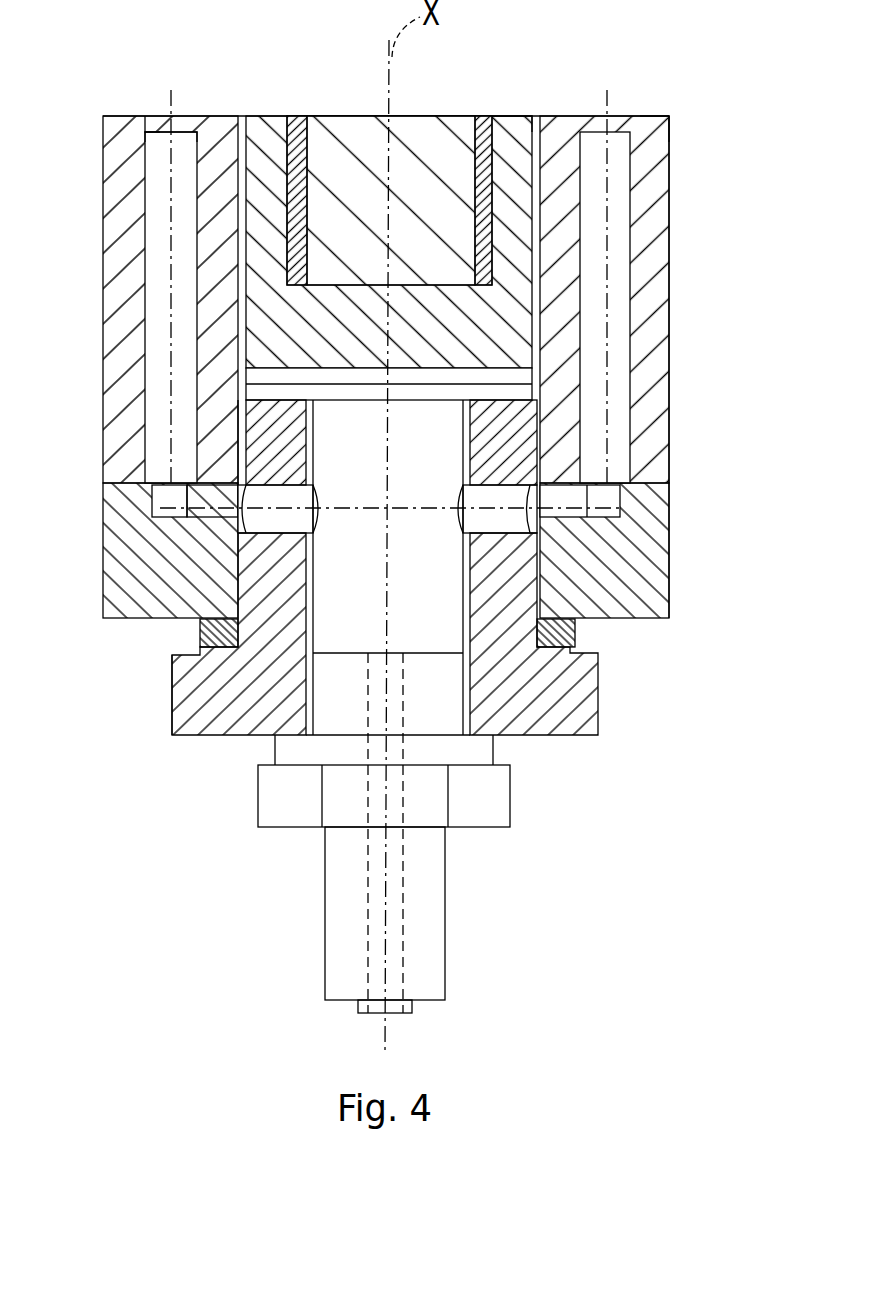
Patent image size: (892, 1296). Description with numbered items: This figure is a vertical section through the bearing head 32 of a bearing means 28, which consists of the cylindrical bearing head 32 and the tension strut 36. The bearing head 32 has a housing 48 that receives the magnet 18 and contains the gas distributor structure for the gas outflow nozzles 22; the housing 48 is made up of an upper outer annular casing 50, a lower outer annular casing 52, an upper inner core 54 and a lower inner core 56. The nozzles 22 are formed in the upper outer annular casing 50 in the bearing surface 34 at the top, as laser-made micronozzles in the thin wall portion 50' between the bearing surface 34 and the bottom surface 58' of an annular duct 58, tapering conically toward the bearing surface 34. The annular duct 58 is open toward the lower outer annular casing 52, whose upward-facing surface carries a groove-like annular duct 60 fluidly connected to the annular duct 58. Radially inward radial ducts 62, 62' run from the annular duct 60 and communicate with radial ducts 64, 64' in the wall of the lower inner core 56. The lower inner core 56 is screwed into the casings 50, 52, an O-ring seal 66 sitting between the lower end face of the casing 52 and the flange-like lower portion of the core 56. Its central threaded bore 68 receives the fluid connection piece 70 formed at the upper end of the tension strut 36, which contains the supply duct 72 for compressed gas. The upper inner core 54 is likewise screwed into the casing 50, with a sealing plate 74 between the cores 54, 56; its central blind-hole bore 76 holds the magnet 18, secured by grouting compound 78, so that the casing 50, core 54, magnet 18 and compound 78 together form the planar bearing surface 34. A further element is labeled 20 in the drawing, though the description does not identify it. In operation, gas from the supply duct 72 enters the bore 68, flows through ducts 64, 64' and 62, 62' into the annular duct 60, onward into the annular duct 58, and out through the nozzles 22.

The magnet 18 is at (336, 116).
The housing 20 is at (118, 114).
The gas outflow nozzles 22 is at (179, 116).
The bearing means 28 is at (128, 697).
The bearing head 32 is at (671, 378).
The bearing surface 34 is at (248, 116).
The tension strut 36 is at (445, 947).
The housing 48 is at (652, 222).
The upper outer annular casing 50 is at (700, 120).
The thin wall portion 50' is at (162, 71).
The lower outer annular casing 52 is at (657, 575).
The upper inner core 54 is at (512, 116).
The lower inner core 56 is at (583, 714).
The annular duct 58 is at (388, 307).
The bottom surface of the annular duct 58' is at (117, 170).
The groove-like annular duct 60 is at (160, 497).
The radial duct 62 is at (170, 545).
The radial duct 62' is at (606, 514).
The radial duct 64 is at (304, 537).
The radial duct 64' is at (466, 537).
The O-ring seal 66 is at (200, 634).
The central threaded bore 68 is at (462, 672).
The fluid connection piece 70 is at (490, 808).
The supply duct 72 is at (372, 902).
The sealing plate 74 is at (400, 392).
The central blind-hole bore 76 is at (279, 127).
The grouting compound 78 is at (487, 116).